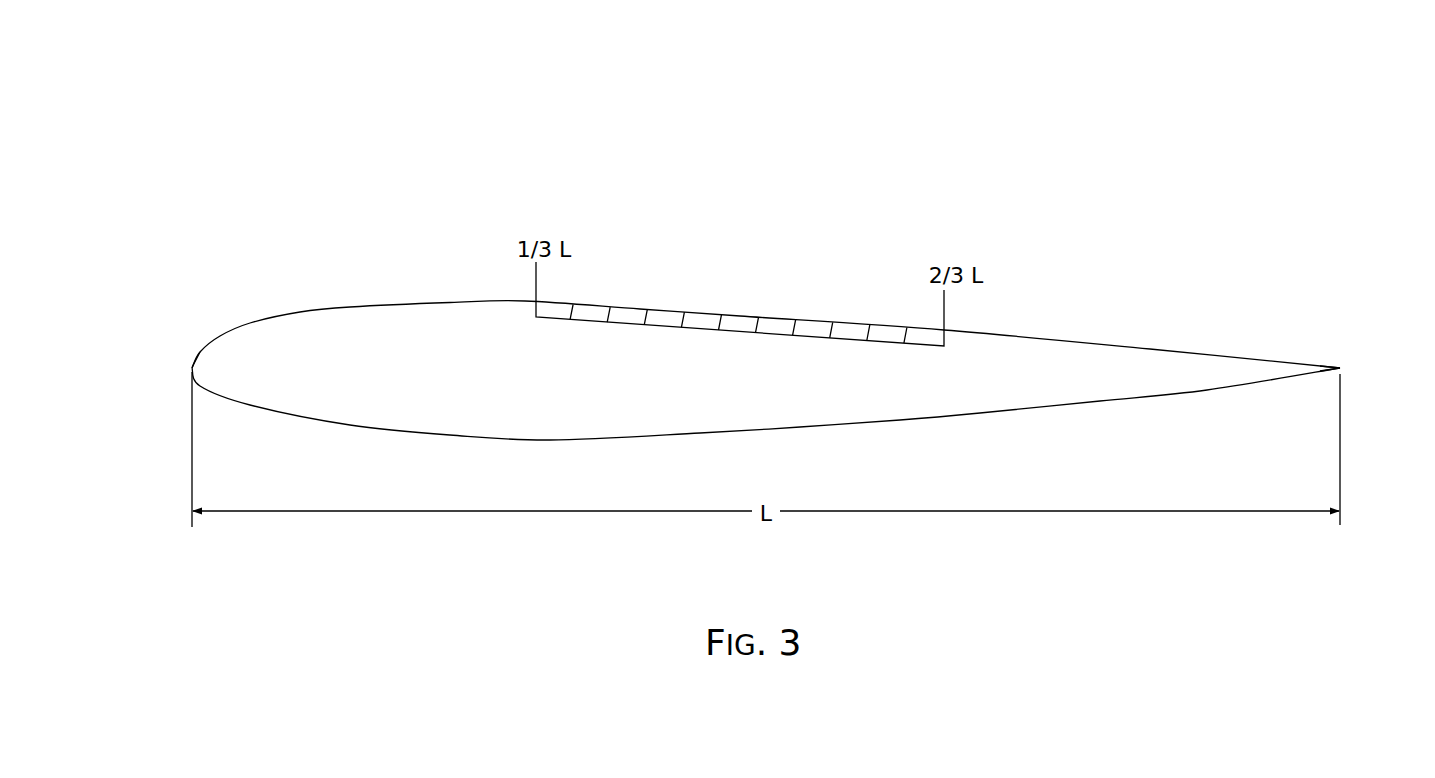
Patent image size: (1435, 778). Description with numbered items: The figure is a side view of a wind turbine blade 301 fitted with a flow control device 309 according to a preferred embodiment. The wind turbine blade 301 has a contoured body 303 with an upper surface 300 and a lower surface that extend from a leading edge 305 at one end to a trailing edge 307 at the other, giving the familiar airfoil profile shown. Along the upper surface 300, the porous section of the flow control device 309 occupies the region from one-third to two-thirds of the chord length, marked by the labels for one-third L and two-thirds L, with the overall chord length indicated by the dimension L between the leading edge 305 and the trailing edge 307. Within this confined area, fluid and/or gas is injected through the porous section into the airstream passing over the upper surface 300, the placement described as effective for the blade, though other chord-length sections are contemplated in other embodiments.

The upper surface 300 is at (771, 321).
The wind turbine blade 301 is at (1241, 104).
The contoured body 303 is at (405, 305).
The leading edge 305 is at (188, 363).
The trailing edge 307 is at (1345, 365).
The flow control device 309 is at (733, 280).